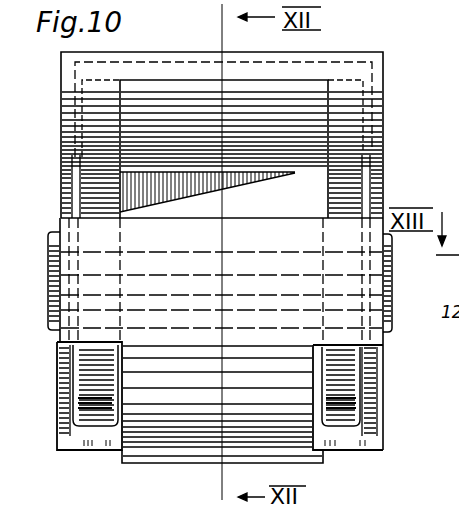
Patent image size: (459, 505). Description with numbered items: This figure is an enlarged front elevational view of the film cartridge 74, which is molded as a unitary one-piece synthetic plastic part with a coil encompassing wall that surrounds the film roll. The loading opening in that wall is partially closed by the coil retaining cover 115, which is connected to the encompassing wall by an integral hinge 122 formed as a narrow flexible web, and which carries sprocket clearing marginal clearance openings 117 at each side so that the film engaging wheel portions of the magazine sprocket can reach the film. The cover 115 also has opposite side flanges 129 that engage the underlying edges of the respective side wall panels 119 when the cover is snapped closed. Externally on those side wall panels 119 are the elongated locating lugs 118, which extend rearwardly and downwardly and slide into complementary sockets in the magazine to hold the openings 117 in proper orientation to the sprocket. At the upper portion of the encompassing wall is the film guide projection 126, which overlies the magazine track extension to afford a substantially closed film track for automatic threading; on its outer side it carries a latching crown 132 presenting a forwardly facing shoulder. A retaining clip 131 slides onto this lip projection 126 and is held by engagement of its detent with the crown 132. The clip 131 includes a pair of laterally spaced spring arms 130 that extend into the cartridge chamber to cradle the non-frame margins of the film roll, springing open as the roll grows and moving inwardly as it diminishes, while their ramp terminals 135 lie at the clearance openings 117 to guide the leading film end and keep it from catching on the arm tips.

The cartridge 74 is at (387, 72).
The latching crown 132 is at (354, 117).
The film guide projection 126 is at (348, 152).
The retaining clip 131 is at (298, 132).
The coil retaining cover 115 is at (270, 280).
The locating lugs 118 is at (393, 289).
The side flanges 129 is at (54, 349).
The side wall panels 119 is at (368, 395).
The spring arms 130 is at (98, 355).
The ramp terminals 135 is at (96, 400).
The sprocket clearing marginal clearance openings 117 is at (121, 430).
The integral hinge 122 is at (180, 463).